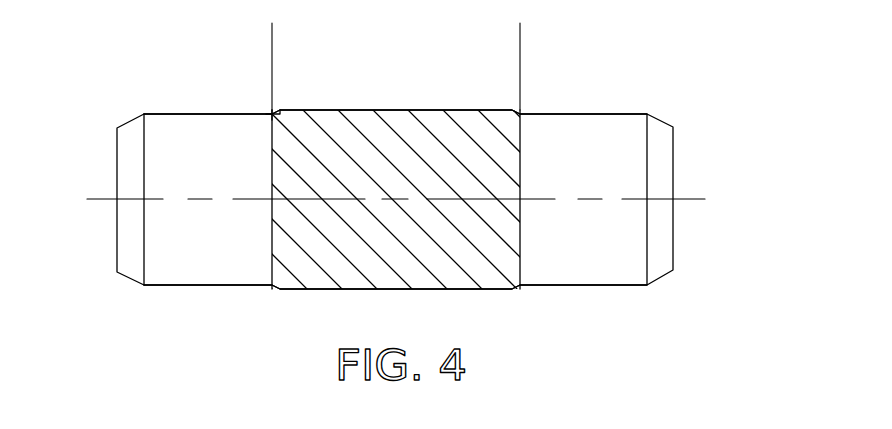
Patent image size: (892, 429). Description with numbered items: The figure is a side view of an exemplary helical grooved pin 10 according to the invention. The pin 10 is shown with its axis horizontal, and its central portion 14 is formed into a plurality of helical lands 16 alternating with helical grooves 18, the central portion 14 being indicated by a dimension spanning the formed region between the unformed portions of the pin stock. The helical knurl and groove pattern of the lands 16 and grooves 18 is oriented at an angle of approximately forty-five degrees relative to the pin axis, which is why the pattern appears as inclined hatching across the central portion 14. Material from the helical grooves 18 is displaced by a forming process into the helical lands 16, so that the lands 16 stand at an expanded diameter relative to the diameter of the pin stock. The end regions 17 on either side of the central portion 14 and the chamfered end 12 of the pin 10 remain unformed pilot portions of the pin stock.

The helical grooved pin 10 is at (103, 108).
The chamfered end 12 is at (125, 276).
The central portion 14 is at (520, 46).
The helical lands 16 is at (272, 114).
The end portion 17 is at (193, 286).
The helical grooves 18 is at (327, 117).